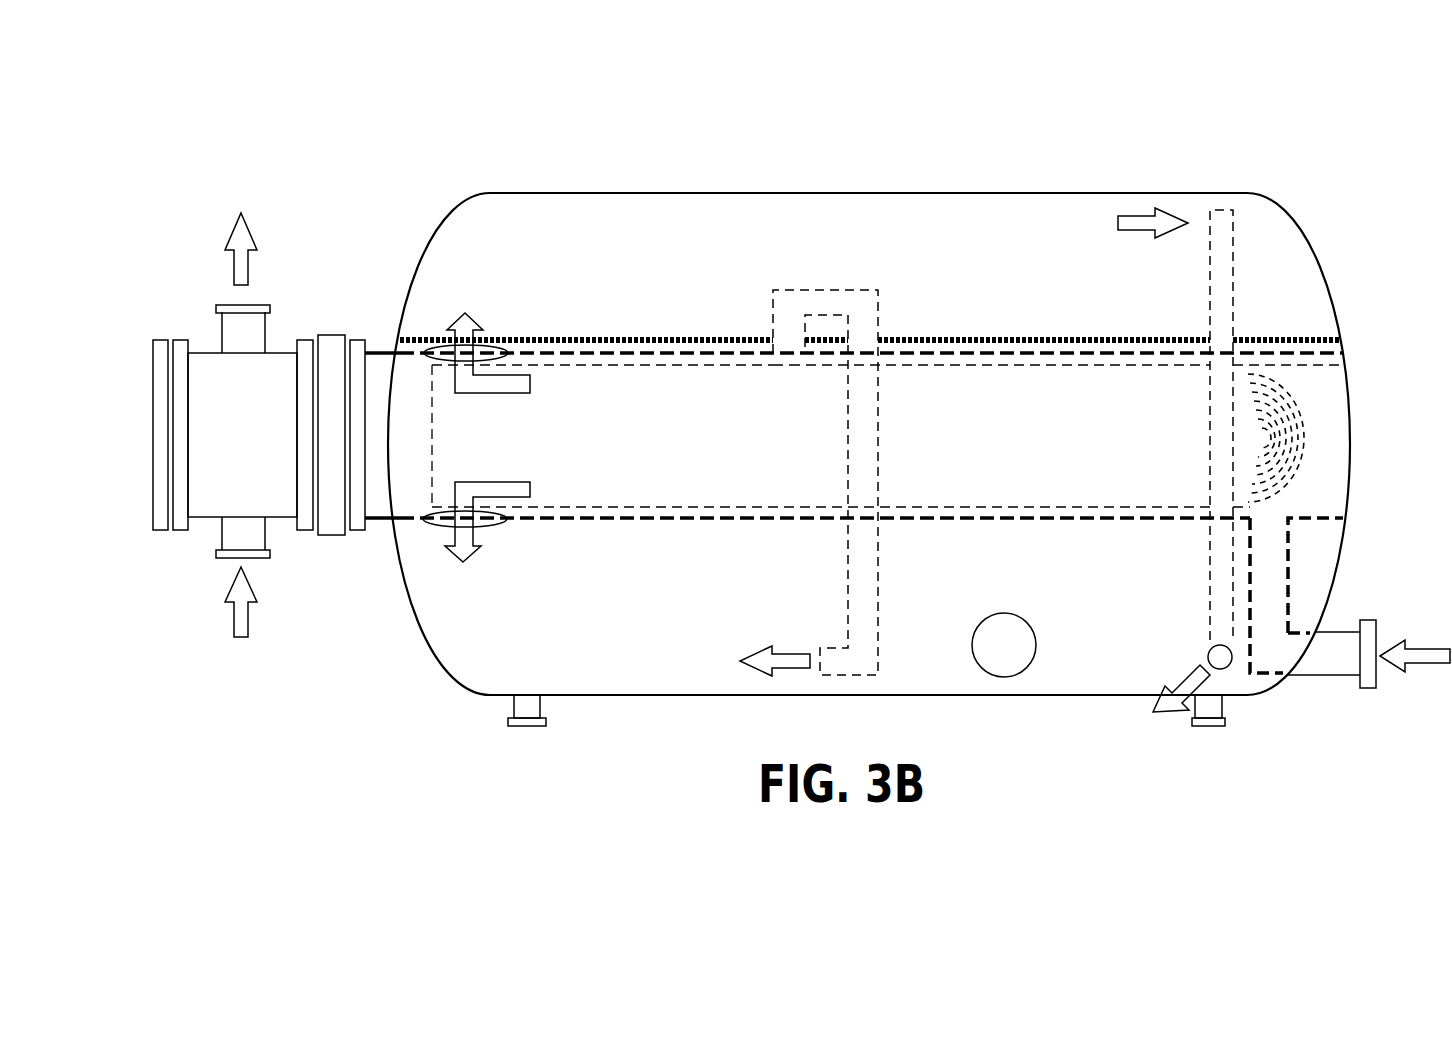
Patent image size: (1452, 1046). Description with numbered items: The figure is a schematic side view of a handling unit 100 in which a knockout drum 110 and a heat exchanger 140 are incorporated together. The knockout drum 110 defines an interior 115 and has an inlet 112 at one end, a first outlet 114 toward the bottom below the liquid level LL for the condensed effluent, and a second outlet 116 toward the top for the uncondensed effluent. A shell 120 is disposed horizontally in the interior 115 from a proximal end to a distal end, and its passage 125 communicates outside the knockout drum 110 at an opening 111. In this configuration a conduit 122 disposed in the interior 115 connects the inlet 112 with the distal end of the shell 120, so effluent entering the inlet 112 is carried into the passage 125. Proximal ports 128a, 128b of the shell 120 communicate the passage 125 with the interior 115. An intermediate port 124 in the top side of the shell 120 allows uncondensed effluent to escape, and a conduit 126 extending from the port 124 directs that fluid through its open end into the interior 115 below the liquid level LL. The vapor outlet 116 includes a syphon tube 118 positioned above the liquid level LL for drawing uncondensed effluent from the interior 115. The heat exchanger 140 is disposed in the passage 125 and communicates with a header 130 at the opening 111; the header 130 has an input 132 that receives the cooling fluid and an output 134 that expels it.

The handling unit 100 is at (1302, 186).
The knockout drum 110 is at (645, 193).
The opening 111 is at (356, 340).
The inlet 112 is at (1367, 688).
The first outlet 114 is at (1005, 677).
The interior 115 is at (752, 196).
The second outlet 116 is at (1208, 654).
The syphon tube 118 is at (1210, 304).
The shell 120 is at (958, 520).
The conduit 122 is at (1290, 552).
The intermediate port 124 is at (798, 355).
The passage 125 is at (1027, 505).
The conduit 126 is at (773, 302).
The proximal port 128a is at (502, 348).
The proximal port 128b is at (493, 525).
The header 130 is at (153, 432).
The input 132 is at (216, 555).
The output 134 is at (216, 308).
The heat exchanger 140 is at (1318, 412).
The liquid level LL is at (1295, 338).